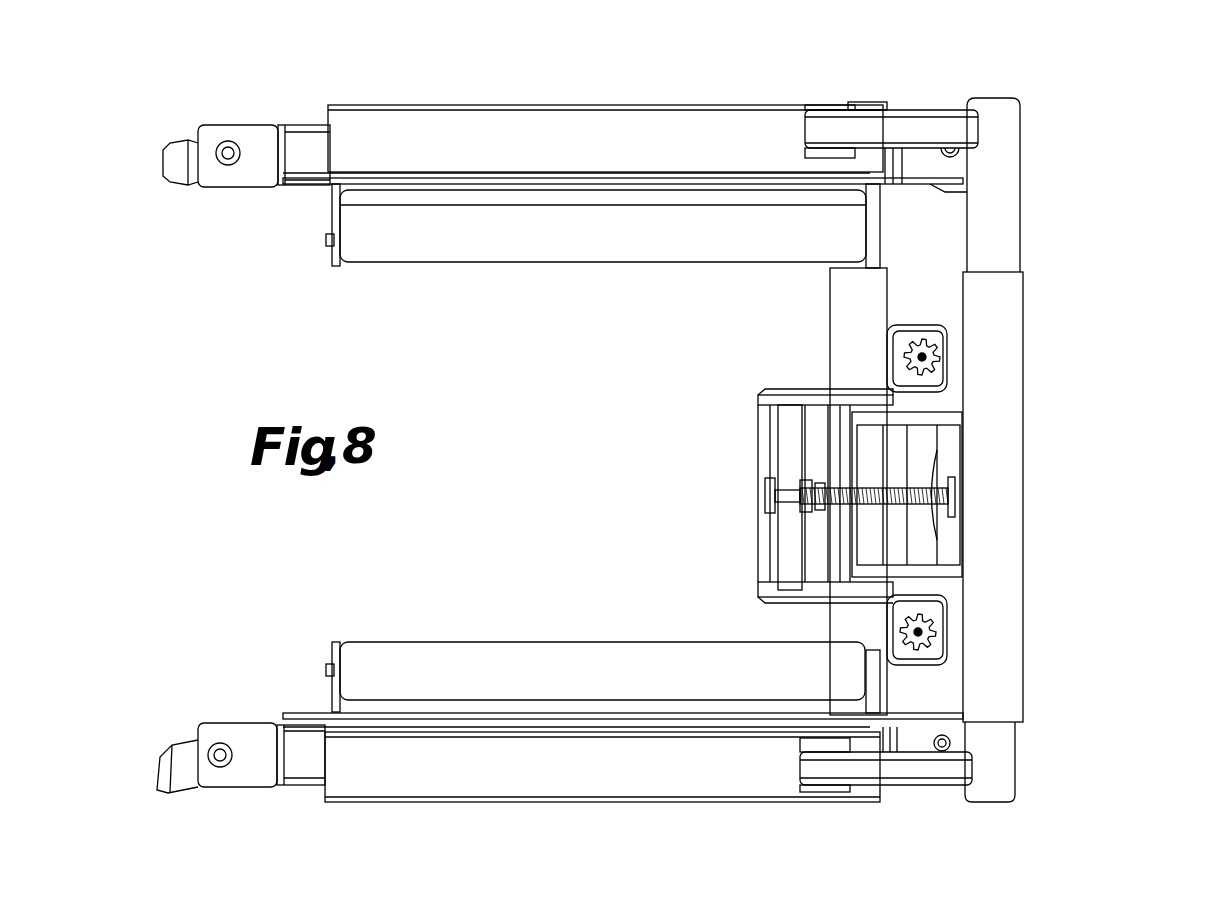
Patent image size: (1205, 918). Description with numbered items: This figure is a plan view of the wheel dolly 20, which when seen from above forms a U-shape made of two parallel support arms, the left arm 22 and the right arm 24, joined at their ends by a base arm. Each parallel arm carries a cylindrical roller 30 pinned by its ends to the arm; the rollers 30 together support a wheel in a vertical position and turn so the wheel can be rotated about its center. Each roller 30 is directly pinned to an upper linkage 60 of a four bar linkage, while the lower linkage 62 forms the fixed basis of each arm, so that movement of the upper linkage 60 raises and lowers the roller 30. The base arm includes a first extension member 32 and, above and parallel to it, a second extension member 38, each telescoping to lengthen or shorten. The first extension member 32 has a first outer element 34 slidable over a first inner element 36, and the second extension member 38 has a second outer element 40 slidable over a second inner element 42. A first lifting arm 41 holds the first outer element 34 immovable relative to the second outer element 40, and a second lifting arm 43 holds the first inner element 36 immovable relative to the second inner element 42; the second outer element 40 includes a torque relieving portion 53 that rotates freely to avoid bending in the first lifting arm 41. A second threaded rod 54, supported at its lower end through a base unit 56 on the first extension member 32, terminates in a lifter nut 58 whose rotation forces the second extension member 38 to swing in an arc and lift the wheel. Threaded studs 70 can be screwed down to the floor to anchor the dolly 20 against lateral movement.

The wheel dolly 20 is at (268, 546).
The left arm 22 is at (547, 806).
The right arm 24 is at (390, 90).
The cylindrical roller 30 is at (566, 240).
The first extension member 32 is at (812, 350).
The first outer element 34 is at (848, 305).
The first inner element 36 is at (865, 262).
The second extension member 38 is at (1052, 342).
The second outer element 40 is at (1008, 398).
The first lifting arm 41 is at (912, 772).
The second inner element 42 is at (1005, 192).
The second lifting arm 43 is at (900, 130).
The torque relieving portion 53 is at (1005, 771).
The second threaded rod 54 is at (830, 490).
The base unit 56 is at (768, 532).
The lifter nut 58 is at (960, 495).
The upper linkage 60 is at (400, 128).
The lower linkage 62 is at (308, 163).
The threaded stud 70 is at (926, 355).